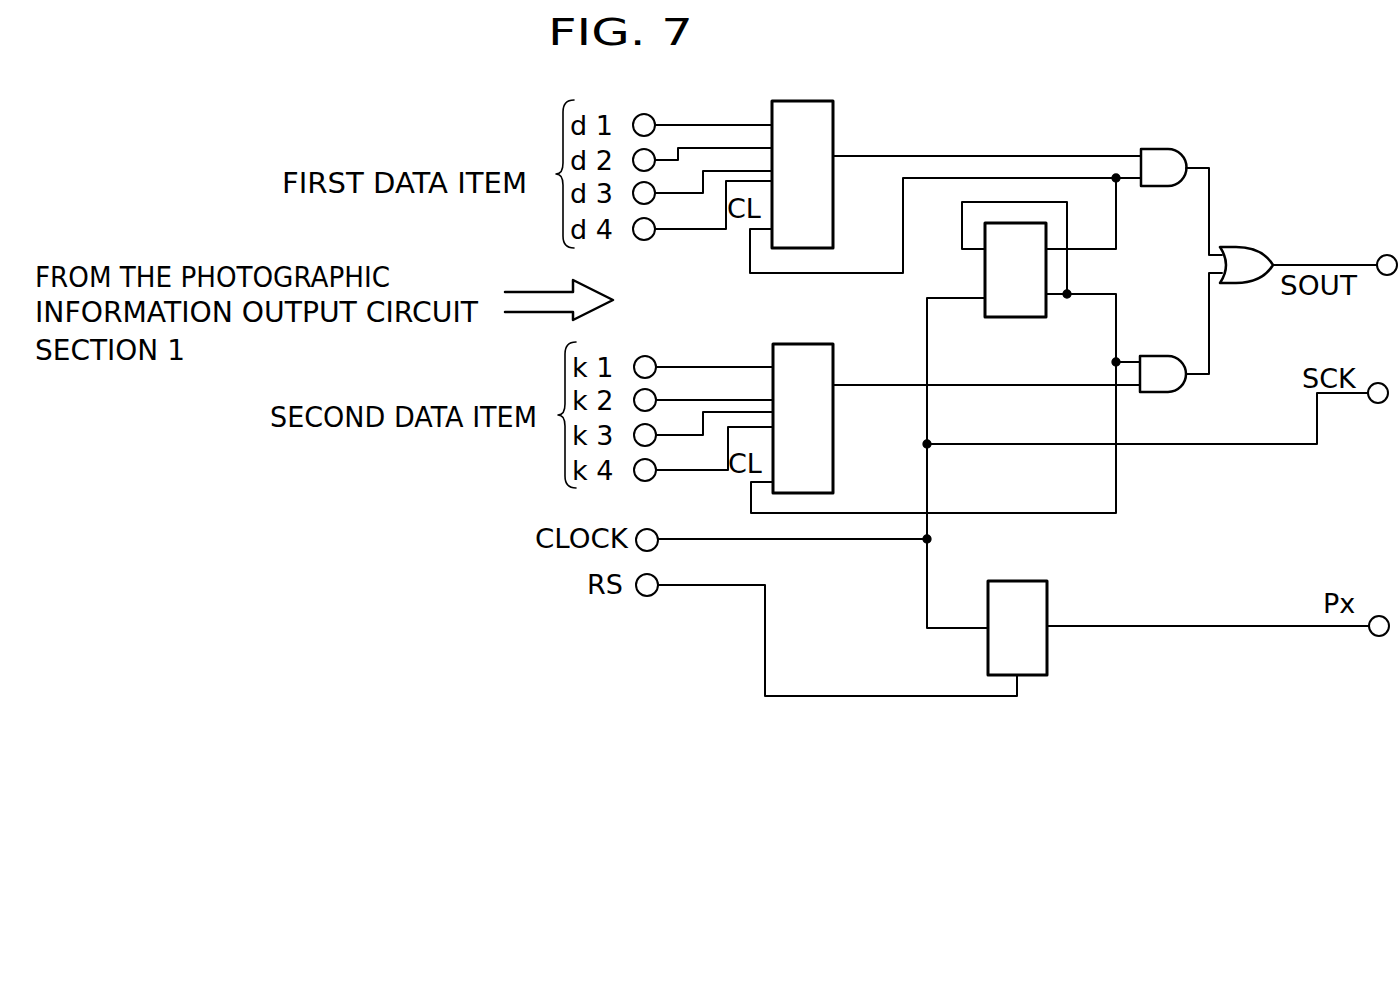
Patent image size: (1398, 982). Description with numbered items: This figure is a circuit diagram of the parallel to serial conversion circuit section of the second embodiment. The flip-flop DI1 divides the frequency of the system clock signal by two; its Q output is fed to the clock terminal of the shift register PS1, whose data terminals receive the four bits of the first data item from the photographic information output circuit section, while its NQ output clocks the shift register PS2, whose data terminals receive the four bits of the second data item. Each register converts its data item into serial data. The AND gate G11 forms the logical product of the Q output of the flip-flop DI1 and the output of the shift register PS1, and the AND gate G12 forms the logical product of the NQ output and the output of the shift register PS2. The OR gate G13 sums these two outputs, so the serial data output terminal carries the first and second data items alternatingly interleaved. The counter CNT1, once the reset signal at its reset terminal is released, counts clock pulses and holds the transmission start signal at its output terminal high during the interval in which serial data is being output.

The shift register PS1 is at (833, 101).
The shift register PS2 is at (833, 468).
The flip-flop DI1 is at (1008, 318).
The AND gate G11 is at (1158, 148).
The AND gate G12 is at (1162, 355).
The OR gate G13 is at (1247, 283).
The counter CNT1 is at (1047, 600).